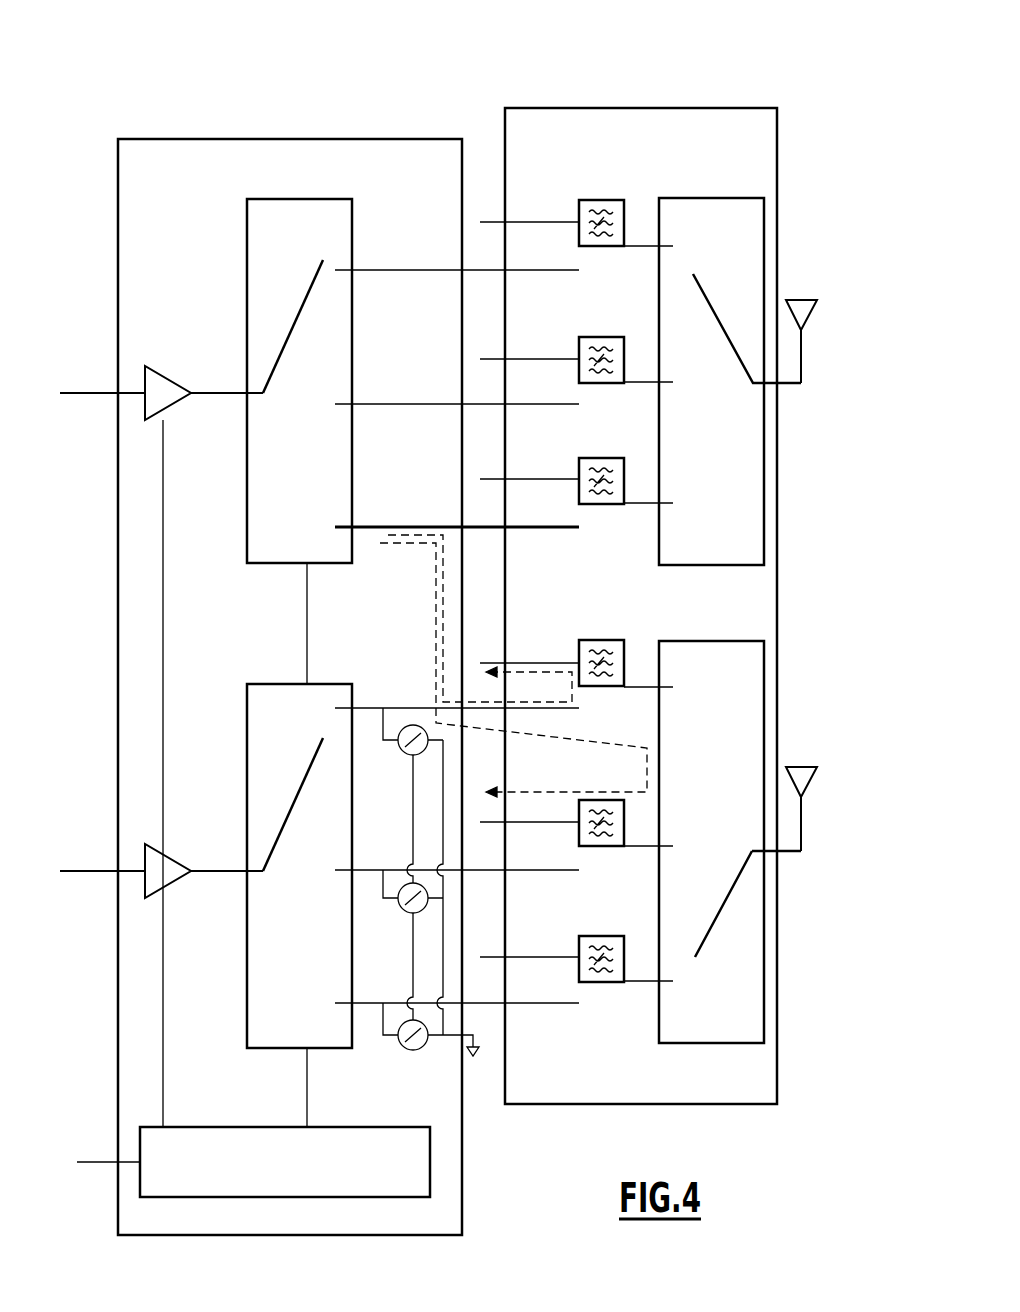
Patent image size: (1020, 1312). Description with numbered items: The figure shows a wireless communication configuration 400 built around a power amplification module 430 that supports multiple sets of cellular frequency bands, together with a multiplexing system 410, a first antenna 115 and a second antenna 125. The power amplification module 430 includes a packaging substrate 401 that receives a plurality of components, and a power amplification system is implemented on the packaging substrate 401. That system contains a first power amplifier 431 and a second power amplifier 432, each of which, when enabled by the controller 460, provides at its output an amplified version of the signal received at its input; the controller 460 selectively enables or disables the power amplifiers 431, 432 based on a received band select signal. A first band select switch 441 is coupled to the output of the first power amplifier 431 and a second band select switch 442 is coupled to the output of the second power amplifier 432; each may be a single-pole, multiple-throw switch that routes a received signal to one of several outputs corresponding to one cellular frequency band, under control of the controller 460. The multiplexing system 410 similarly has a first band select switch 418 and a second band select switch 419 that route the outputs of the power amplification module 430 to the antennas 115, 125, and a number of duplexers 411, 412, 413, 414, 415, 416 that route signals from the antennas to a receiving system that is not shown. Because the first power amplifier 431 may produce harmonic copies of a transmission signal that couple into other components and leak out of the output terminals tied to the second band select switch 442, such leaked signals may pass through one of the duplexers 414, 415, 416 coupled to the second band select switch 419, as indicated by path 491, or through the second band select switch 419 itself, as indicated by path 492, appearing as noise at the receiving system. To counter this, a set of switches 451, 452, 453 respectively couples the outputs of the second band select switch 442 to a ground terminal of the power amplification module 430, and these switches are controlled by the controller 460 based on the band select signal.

The wireless communication configuration 400 is at (470, 80).
The packaging substrate 401 is at (147, 201).
The power amplification module 430 is at (230, 139).
The multiplexing system 410 is at (600, 108).
The first power amplifier 431 is at (166, 378).
The second power amplifier 432 is at (166, 856).
The first band select switch 441 is at (335, 199).
The second band select switch 442 is at (335, 684).
The switch 451 is at (413, 757).
The switch 452 is at (413, 914).
The switch 453 is at (413, 1050).
The controller 460 is at (330, 1127).
The duplexer 411 is at (600, 200).
The duplexer 412 is at (600, 337).
The duplexer 413 is at (600, 458).
The duplexer 414 is at (600, 640).
The duplexer 415 is at (590, 890).
The duplexer 416 is at (600, 936).
The first band select switch 418 is at (700, 199).
The second band select switch 419 is at (700, 641).
The first antenna 115 is at (812, 310).
The second antenna 125 is at (812, 777).
The path 491 is at (478, 700).
The path 492 is at (481, 733).